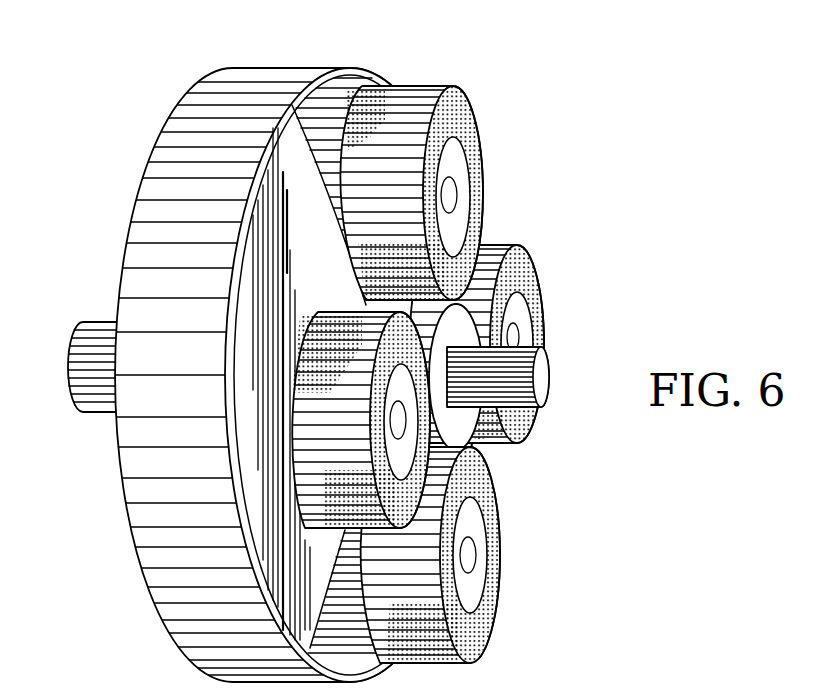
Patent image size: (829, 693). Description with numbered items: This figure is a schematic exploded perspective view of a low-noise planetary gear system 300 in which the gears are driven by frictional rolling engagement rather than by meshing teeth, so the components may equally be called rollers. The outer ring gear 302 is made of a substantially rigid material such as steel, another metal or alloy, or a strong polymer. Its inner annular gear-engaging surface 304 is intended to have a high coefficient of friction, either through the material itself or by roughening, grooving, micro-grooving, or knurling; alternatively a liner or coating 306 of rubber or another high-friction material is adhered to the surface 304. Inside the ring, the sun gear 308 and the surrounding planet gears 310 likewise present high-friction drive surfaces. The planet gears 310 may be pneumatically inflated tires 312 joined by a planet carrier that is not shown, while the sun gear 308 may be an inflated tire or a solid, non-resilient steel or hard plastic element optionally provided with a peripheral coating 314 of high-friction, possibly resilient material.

The planetary gear system 300 is at (137, 97).
The ring gear 302 is at (153, 535).
The inner annular gear-engaging surface 304 is at (330, 163).
The liner or coating 306 is at (334, 167).
The sun gear 308 is at (432, 330).
The planet gears 310 is at (345, 260).
The pneumatically inflated tires 312 is at (530, 288).
The peripheral coating 314 is at (453, 427).